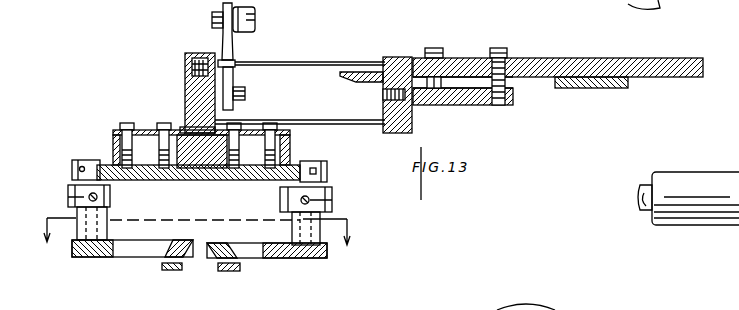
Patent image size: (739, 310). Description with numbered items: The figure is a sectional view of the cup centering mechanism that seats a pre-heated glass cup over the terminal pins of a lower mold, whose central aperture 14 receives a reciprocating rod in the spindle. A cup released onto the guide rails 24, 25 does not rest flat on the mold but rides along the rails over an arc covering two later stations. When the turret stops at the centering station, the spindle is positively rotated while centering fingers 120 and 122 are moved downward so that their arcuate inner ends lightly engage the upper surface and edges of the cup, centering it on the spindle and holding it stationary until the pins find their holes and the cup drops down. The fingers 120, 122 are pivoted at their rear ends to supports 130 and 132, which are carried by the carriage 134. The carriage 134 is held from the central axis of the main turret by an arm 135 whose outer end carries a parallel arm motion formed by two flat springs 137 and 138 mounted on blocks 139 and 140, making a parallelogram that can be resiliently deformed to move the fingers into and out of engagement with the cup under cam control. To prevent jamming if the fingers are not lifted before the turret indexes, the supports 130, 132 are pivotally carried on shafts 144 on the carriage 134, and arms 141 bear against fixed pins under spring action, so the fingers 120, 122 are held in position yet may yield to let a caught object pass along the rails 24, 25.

The central aperture 14 is at (195, 244).
The guide rail 24 is at (233, 273).
The guide rail 25 is at (176, 272).
The centering finger 120 is at (145, 259).
The centering finger 122 is at (258, 259).
The support 130 is at (108, 214).
The support 132 is at (328, 191).
The carriage 134 is at (211, 170).
The arm 135 is at (545, 60).
The flat spring 137 is at (305, 63).
The flat spring 138 is at (347, 120).
The block 139 is at (413, 112).
The block 140 is at (185, 103).
The arm 141 is at (70, 198).
The shaft 144 is at (95, 160).